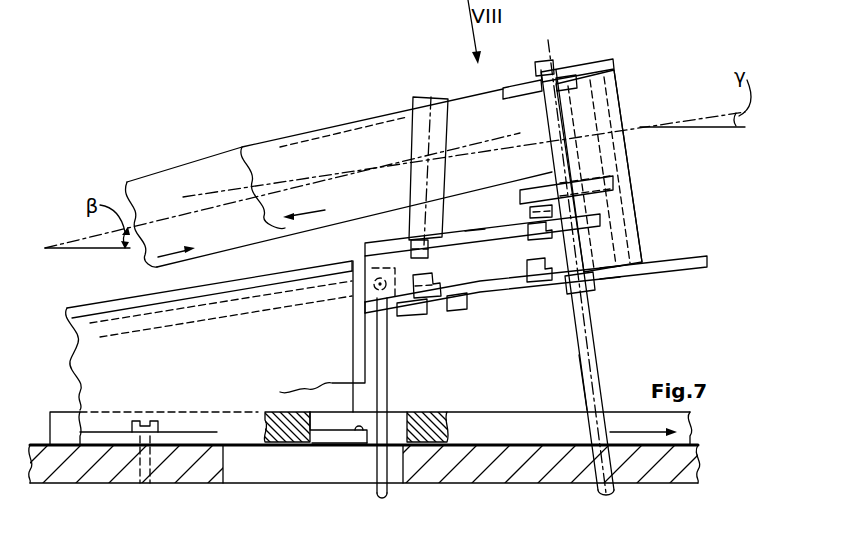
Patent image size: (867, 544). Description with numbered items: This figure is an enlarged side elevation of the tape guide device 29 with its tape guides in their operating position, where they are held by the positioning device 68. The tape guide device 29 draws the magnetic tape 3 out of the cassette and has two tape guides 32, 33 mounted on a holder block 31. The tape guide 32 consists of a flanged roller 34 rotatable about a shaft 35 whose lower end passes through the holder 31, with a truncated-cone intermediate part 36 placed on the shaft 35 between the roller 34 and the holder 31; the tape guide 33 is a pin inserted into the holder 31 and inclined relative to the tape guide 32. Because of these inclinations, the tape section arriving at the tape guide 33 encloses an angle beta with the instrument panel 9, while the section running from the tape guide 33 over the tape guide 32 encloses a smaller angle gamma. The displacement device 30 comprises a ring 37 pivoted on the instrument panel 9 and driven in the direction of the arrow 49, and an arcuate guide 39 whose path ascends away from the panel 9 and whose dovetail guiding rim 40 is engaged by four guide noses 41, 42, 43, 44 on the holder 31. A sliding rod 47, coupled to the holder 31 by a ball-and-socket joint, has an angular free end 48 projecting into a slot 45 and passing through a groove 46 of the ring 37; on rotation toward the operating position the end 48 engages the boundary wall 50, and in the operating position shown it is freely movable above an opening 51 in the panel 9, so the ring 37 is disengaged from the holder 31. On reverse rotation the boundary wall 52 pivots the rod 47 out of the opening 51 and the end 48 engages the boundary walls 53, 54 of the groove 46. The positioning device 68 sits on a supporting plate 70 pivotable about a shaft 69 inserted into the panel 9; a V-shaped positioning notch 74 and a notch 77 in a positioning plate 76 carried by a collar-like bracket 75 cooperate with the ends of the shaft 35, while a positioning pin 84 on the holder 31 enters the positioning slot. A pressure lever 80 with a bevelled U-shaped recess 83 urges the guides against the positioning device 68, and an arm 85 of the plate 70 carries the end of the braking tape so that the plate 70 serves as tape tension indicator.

The magnetic tape 3 is at (266, 141).
The instrument panel 9 is at (698, 462).
The tape guide device 29 is at (362, 238).
The displacement device 30 is at (63, 378).
The holder block 31 is at (475, 240).
The tape guide 32 is at (492, 85).
The tape guide 33 is at (413, 104).
The roller 34 is at (590, 115).
The shaft 35 is at (538, 62).
The intermediate part 36 is at (590, 219).
The ring 37 is at (494, 422).
The arcuate guide 39 is at (78, 388).
The guiding rim 40 is at (130, 300).
The guide nose 41 is at (530, 237).
The guide nose 42 is at (527, 272).
The guide nose 43 is at (428, 250).
The guide nose 44 is at (412, 290).
The slot 45 is at (353, 410).
The groove 46 is at (320, 450).
The sliding rod 47 is at (384, 354).
The angular free end 48 is at (387, 497).
The arrow 49 is at (684, 422).
The boundary wall 50 is at (268, 412).
The opening 51 is at (250, 481).
The boundary wall 52 is at (405, 412).
The boundary wall 53 is at (342, 430).
The boundary wall 54 is at (362, 438).
The positioning device 68 is at (602, 294).
The shaft 69 is at (583, 374).
The supporting plate 70 is at (507, 295).
The positioning notch 74 is at (598, 283).
The bracket 75 is at (622, 142).
The positioning plate 76 is at (588, 64).
The positioning notch 77 is at (565, 74).
The pressure lever 80 is at (529, 212).
The U-shaped recess 83 is at (603, 200).
The positioning pin 84 is at (468, 308).
The arm 85 is at (688, 258).